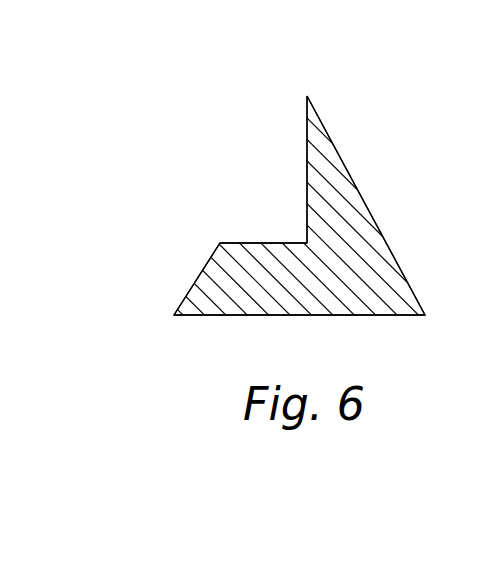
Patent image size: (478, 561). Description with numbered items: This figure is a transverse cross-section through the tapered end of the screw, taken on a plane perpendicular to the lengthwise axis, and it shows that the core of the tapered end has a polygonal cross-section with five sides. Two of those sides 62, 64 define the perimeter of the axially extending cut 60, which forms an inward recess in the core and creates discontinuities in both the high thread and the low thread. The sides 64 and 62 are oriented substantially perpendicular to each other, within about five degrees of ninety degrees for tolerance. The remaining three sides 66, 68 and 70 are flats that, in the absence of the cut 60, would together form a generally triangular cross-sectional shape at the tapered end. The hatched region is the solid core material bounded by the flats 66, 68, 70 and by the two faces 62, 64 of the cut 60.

The axially extending cut 60 is at (278, 198).
The side 62 is at (250, 243).
The side 64 is at (307, 133).
The side 66 is at (228, 316).
The side 68 is at (367, 207).
The side 70 is at (200, 278).